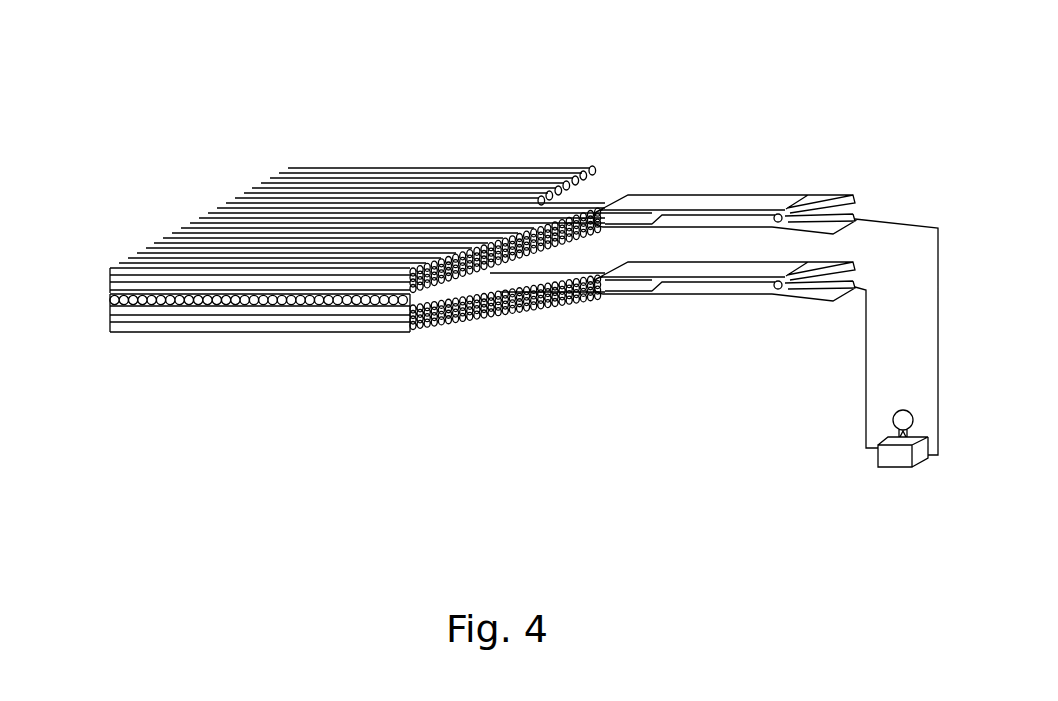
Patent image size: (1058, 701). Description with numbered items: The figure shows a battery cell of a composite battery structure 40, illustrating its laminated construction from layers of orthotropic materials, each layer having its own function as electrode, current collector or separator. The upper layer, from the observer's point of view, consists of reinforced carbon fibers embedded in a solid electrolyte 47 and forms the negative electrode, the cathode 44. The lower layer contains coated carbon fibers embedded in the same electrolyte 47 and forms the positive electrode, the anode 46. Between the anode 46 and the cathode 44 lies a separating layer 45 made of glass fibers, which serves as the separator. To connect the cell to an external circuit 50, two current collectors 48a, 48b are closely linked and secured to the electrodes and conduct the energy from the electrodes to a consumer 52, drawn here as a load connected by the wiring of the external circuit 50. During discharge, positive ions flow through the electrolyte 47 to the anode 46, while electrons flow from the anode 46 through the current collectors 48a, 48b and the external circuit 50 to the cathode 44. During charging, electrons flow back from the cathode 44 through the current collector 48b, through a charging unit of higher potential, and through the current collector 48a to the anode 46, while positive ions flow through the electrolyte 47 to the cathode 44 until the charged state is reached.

The composite battery structure 40 is at (541, 86).
The cathode 44 is at (108, 271).
The separating layer 45 is at (110, 299).
The anode 46 is at (110, 327).
The electrolyte 47 is at (188, 258).
The current collector 48a is at (553, 287).
The current collector 48b is at (375, 210).
The external circuit 50 is at (866, 386).
The consumer 52 is at (895, 458).